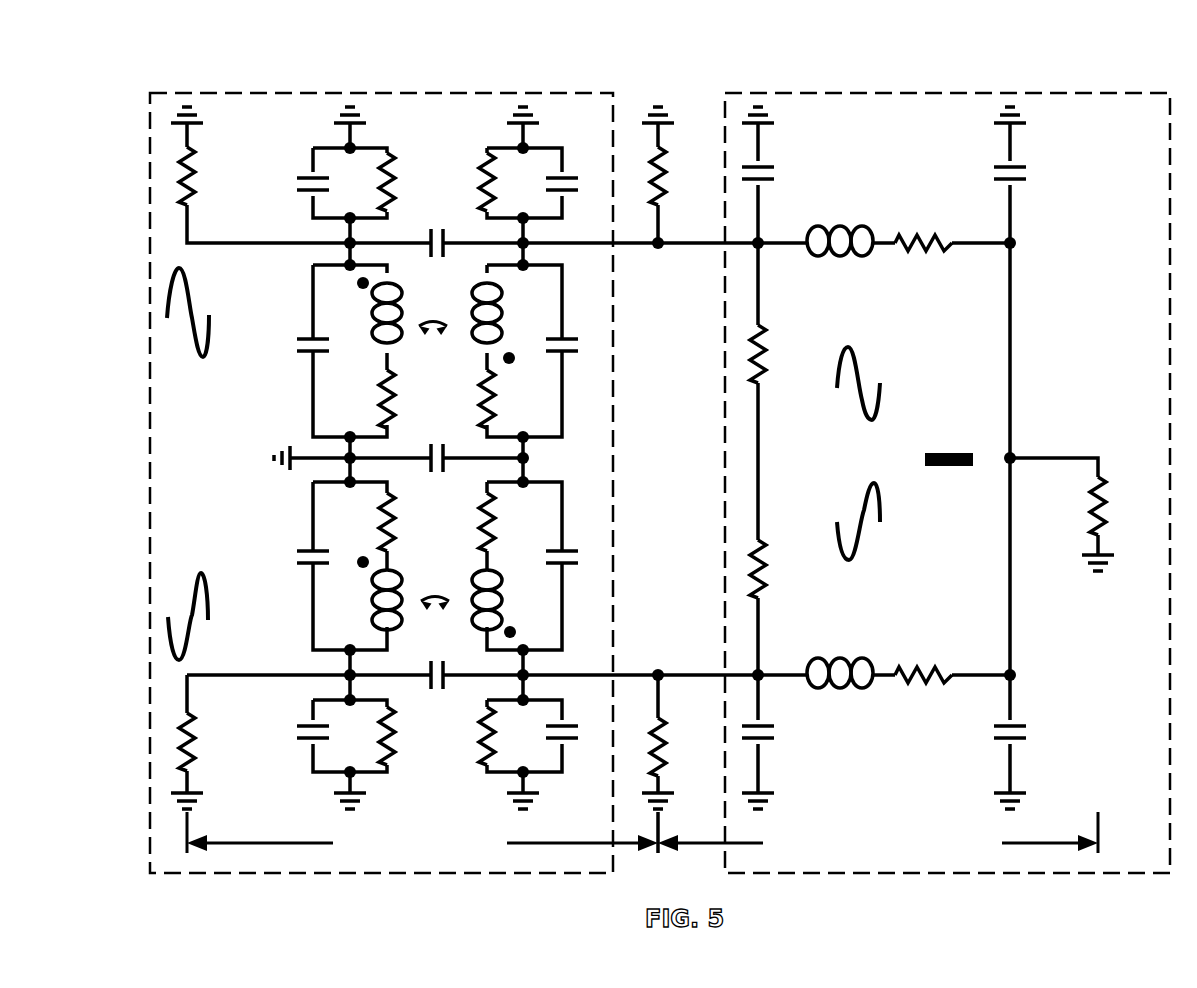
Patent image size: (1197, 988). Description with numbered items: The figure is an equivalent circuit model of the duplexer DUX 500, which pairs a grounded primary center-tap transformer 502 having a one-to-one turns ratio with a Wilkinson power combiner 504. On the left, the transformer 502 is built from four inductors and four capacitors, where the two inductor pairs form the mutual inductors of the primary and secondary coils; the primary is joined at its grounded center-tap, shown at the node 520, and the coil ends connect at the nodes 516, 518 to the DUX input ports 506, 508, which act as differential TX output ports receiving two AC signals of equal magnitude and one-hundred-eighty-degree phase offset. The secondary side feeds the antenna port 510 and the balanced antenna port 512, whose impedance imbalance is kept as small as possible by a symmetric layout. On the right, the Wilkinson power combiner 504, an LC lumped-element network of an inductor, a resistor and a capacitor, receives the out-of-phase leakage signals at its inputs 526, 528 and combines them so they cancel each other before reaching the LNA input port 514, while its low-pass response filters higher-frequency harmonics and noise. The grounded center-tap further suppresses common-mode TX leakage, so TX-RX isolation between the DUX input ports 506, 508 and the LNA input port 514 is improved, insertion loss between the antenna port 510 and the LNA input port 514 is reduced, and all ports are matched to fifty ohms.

The DUX 500 is at (1060, 74).
The grounded primary center-tap transformer 502 is at (298, 92).
The Wilkinson power combiner 504 is at (817, 93).
The DUX input port 506 is at (185, 242).
The DUX input port 508 is at (187, 675).
The ANT port 510 is at (658, 243).
The ANT_BAL port 512 is at (658, 675).
The LNA input port 514 is at (1010, 458).
The first transformer node 516 is at (340, 246).
The second transformer node 518 is at (345, 673).
The center tap ground node 520 is at (345, 456).
The input to the Wilkinson power combiner 526 is at (758, 243).
The input to the Wilkinson power combiner 528 is at (758, 675).